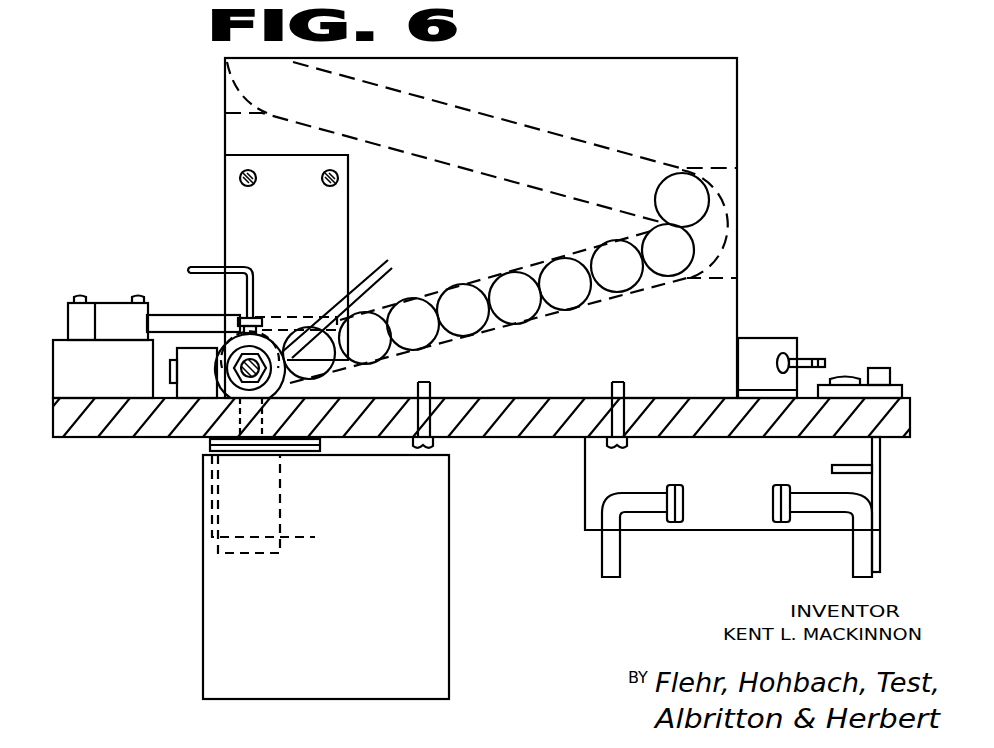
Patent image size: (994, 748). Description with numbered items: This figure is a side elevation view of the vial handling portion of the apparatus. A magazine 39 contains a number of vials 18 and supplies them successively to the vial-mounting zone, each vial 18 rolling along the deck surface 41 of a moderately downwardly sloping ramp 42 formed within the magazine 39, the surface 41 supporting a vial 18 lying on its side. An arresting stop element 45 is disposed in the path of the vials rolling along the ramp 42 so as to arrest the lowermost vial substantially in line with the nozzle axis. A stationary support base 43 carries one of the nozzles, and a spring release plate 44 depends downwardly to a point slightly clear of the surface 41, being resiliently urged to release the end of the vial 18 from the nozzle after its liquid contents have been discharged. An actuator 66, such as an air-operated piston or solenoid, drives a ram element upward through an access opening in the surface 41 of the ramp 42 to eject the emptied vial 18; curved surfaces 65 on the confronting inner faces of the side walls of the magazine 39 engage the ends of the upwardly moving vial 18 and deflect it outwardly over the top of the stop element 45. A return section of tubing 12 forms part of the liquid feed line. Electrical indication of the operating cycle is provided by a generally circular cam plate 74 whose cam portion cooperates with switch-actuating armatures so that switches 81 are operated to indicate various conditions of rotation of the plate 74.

The magazine 39 is at (748, 128).
The surface 41 is at (540, 185).
The ramp 42 is at (443, 110).
The spring release plate 44 is at (232, 193).
The vial 18 is at (465, 284).
The curved surfaces 65 is at (272, 300).
The return section of tubing 12 is at (238, 268).
The cam plate 74 is at (173, 322).
The switches 81 is at (108, 300).
The stationary support base 43 is at (140, 438).
The arresting stop element 45 is at (203, 572).
The actuator 66 is at (285, 520).